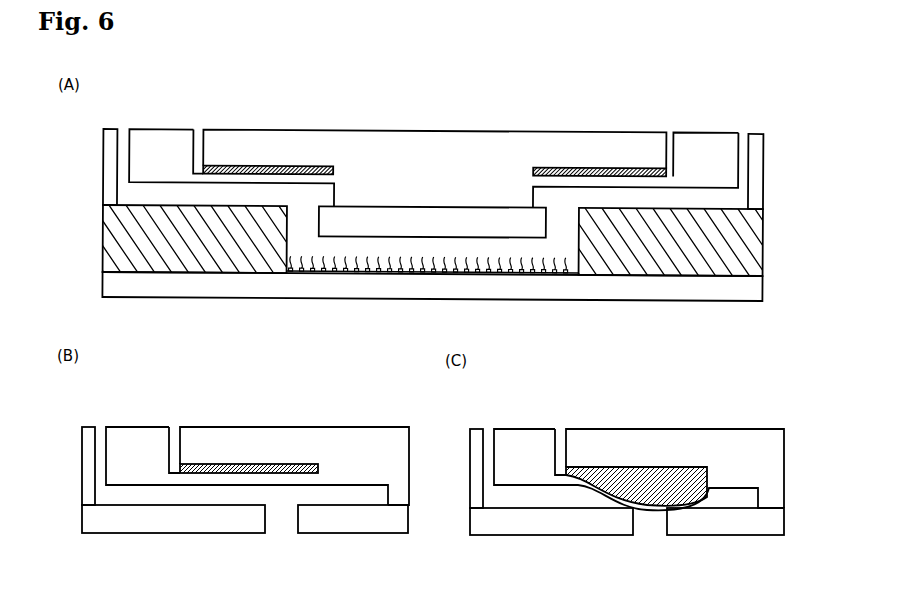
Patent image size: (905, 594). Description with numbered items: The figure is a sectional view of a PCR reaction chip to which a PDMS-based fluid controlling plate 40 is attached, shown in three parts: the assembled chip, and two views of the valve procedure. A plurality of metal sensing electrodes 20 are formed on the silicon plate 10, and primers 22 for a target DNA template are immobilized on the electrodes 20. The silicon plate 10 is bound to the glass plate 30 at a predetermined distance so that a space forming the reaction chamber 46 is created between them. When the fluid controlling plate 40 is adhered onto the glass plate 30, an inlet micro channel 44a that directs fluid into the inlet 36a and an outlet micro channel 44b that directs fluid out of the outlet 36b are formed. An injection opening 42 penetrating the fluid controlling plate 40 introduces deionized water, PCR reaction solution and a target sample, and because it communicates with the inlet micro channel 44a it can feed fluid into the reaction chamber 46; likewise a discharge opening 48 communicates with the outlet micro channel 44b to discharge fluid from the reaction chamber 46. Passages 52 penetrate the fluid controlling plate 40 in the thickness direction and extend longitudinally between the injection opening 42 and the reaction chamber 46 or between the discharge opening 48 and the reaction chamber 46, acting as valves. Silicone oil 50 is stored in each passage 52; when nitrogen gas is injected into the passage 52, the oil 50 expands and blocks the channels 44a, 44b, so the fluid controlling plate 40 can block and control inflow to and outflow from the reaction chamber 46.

The silicon plate 10 is at (755, 287).
The metal sensing electrodes 20 is at (546, 274).
The primers 22 is at (545, 268).
The glass plate 30 is at (115, 243).
The inlet 36a is at (294, 214).
The outlet 36b is at (565, 210).
The fluid controlling plate 40 is at (500, 125).
The injection opening 42 is at (124, 128).
The inlet micro channel 44a is at (208, 193).
The outlet micro channel 44b is at (615, 195).
The reaction chamber 46 is at (332, 245).
The discharge opening 48 is at (742, 138).
The silicone oil 50 is at (262, 164).
The passage 52 is at (194, 130).